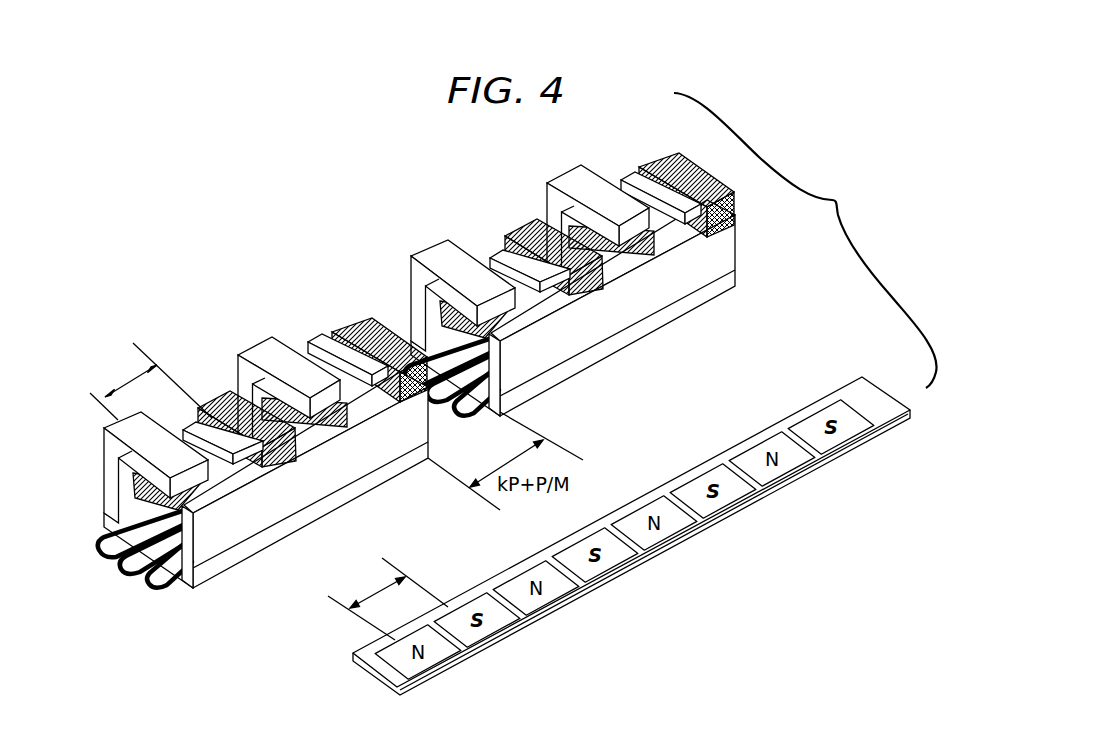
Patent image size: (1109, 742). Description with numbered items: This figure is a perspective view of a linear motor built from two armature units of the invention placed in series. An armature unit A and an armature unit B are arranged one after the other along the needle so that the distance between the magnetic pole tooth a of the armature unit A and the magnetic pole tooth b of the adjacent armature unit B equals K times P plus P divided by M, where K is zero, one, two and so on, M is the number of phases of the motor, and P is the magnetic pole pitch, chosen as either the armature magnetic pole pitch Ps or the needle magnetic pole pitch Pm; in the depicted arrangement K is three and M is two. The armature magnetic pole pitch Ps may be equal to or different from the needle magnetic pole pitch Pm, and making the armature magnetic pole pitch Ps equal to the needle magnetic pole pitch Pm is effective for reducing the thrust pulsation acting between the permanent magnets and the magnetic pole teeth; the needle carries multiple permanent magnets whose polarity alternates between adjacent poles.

The armature unit A is at (258, 342).
The armature unit B is at (546, 199).
The magnetic pole tooth a is at (344, 369).
The magnetic pole tooth b is at (458, 287).
The armature magnetic pole pitch Ps is at (151, 381).
The needle magnetic pole pitch Pm is at (388, 599).